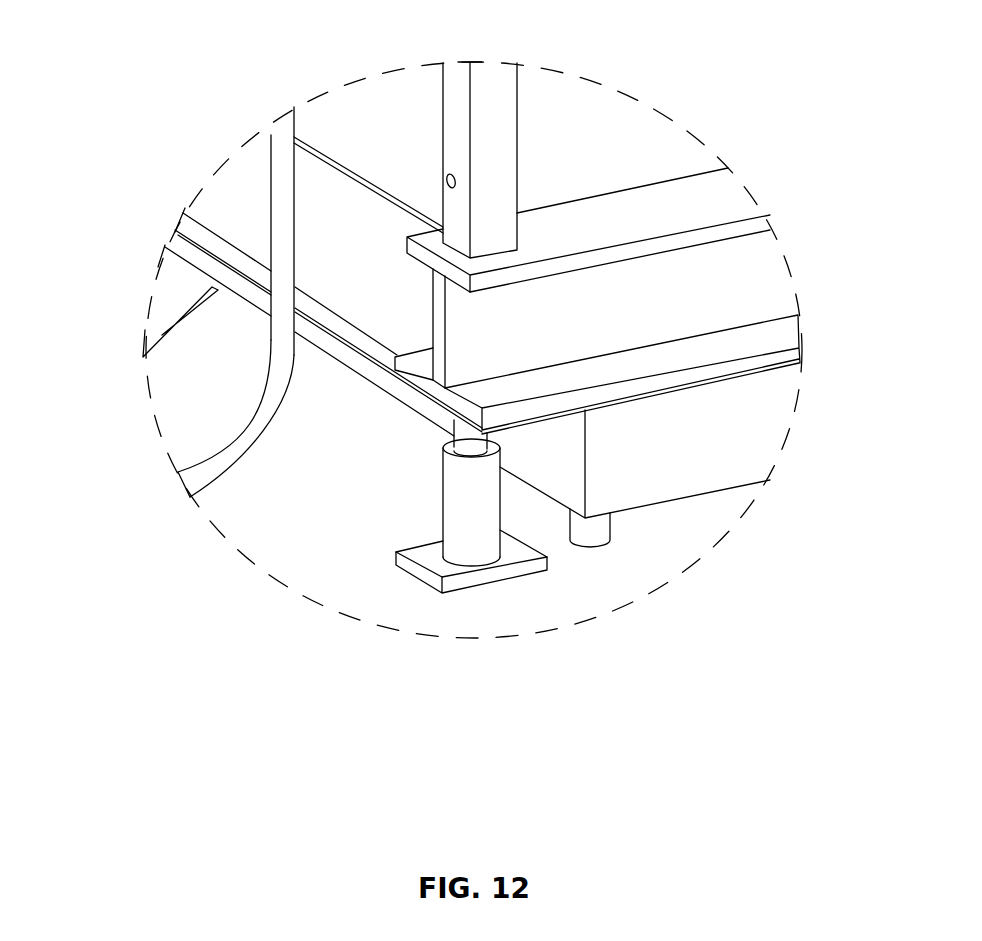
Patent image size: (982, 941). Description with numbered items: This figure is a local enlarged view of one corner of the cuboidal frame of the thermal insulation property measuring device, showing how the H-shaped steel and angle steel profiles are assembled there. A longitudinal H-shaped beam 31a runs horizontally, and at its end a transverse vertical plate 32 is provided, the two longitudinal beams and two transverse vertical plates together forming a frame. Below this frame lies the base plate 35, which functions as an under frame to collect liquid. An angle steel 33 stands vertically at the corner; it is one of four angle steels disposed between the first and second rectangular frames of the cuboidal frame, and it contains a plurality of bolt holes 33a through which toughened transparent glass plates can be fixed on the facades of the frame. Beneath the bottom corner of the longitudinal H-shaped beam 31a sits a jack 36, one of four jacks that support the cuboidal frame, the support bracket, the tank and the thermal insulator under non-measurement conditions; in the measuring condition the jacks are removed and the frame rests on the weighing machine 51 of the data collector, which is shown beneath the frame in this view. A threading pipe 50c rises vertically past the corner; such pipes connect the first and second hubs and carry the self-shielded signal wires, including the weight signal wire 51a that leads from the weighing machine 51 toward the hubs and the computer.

The longitudinal H-shaped beam 31a is at (742, 275).
The transverse vertical plate 32 is at (198, 192).
The angle steel 33 is at (493, 92).
The bolt hole 33a is at (448, 175).
The base plate 35 is at (647, 97).
The jack 36 is at (452, 498).
The threading pipe 50c is at (277, 118).
The weighing machine 51 is at (778, 450).
The weight signal wire 51a is at (146, 329).